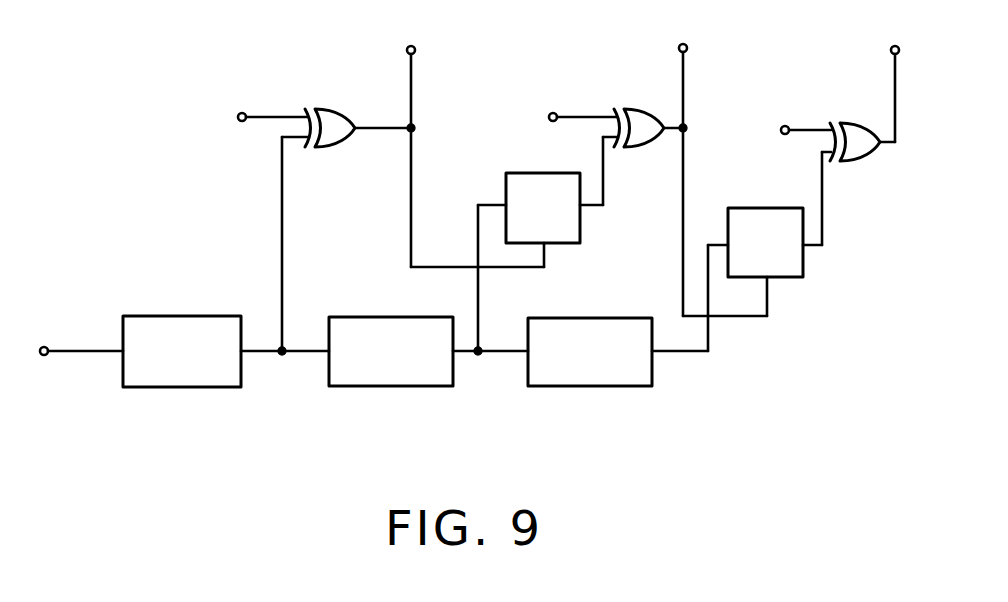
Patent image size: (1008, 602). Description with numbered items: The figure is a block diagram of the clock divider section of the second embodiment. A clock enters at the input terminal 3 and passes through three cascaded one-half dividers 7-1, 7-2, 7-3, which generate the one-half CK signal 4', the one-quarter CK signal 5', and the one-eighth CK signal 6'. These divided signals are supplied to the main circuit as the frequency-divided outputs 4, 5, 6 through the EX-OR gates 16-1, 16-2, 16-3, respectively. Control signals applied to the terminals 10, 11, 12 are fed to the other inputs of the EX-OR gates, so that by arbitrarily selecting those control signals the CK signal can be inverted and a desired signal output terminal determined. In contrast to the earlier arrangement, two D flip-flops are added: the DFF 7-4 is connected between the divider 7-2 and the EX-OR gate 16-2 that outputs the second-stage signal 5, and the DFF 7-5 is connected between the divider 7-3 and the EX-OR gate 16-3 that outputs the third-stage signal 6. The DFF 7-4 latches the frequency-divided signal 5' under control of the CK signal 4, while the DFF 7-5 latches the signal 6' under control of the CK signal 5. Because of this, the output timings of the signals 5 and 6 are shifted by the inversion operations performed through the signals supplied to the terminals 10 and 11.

The clock input terminal 3 is at (44, 347).
The frequency-divided CK signal output 4 is at (475, 152).
The 1/2 CK signal 4' is at (285, 246).
The frequency-divided CK signal output 5 is at (723, 176).
The 1/4 CK signal 5' is at (614, 171).
The frequency-divided CK signal output 6 is at (874, 89).
The 1/8 CK signal 6' is at (831, 198).
The control signal terminal 10 is at (241, 113).
The control signal terminal 11 is at (551, 113).
The control signal terminal 12 is at (784, 126).
The 1/2 divider 7-1 is at (163, 388).
The 1/2 divider 7-2 is at (372, 387).
The 1/2 divider 7-3 is at (570, 387).
The DFF 7-4 is at (582, 237).
The DFF 7-5 is at (805, 268).
The EX-OR gate 16-1 is at (340, 108).
The EX-OR gate 16-2 is at (639, 108).
The EX-OR gate 16-3 is at (855, 121).